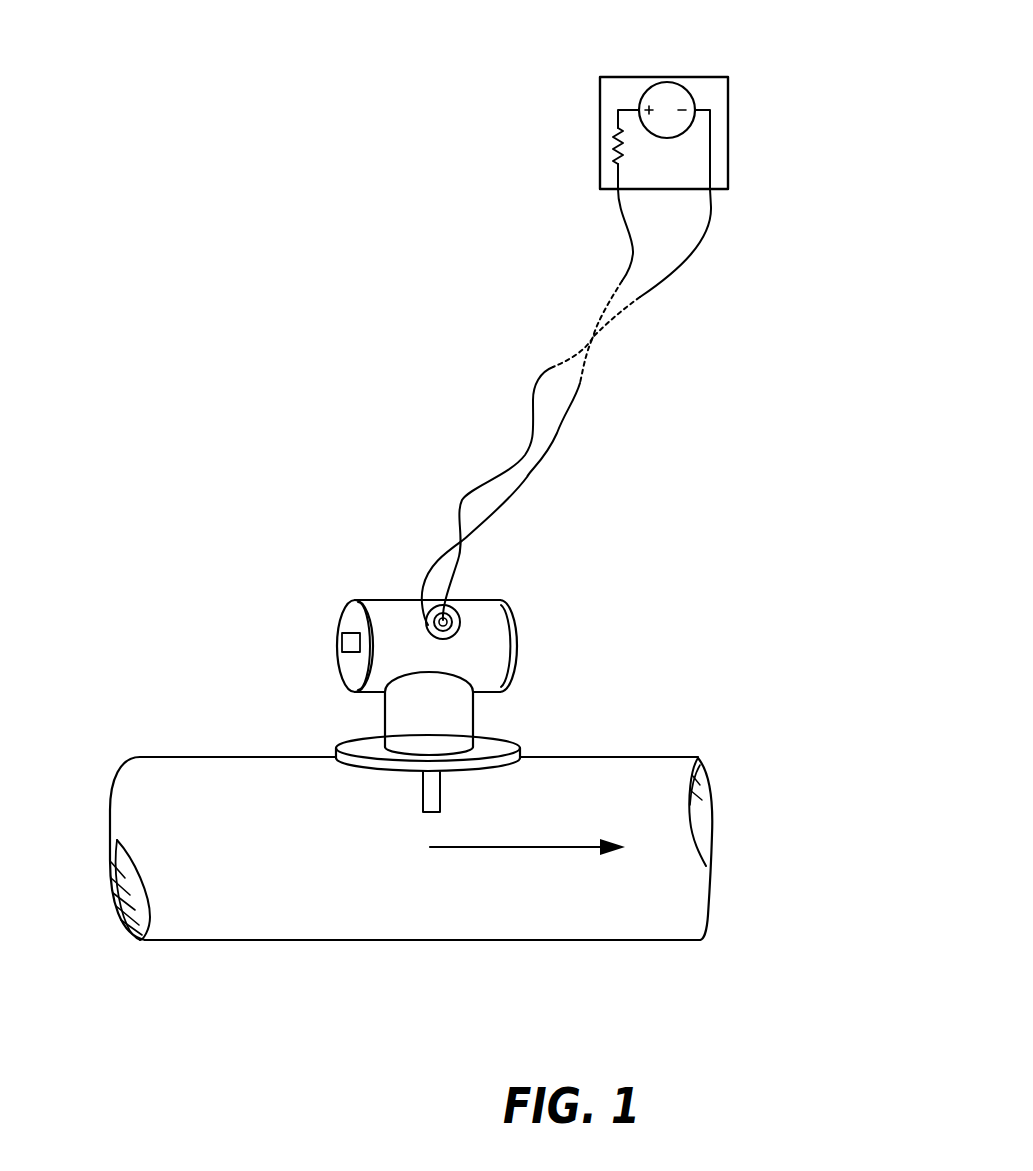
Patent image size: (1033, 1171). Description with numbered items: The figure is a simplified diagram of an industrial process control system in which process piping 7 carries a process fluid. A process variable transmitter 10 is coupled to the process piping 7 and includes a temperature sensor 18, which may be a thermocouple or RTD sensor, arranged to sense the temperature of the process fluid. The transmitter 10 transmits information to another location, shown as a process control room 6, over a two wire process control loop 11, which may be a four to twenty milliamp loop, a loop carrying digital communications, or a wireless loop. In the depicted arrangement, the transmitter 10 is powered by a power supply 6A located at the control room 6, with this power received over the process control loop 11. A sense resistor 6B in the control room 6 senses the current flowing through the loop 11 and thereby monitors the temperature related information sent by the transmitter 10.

The process control room 6 is at (722, 75).
The power supply 6A is at (666, 82).
The sense resistor 6B is at (615, 145).
The two wire process control loop 11 is at (522, 490).
The process variable transmitter 10 is at (532, 624).
The temperature sensor 18 is at (421, 808).
The process piping 7 is at (603, 790).